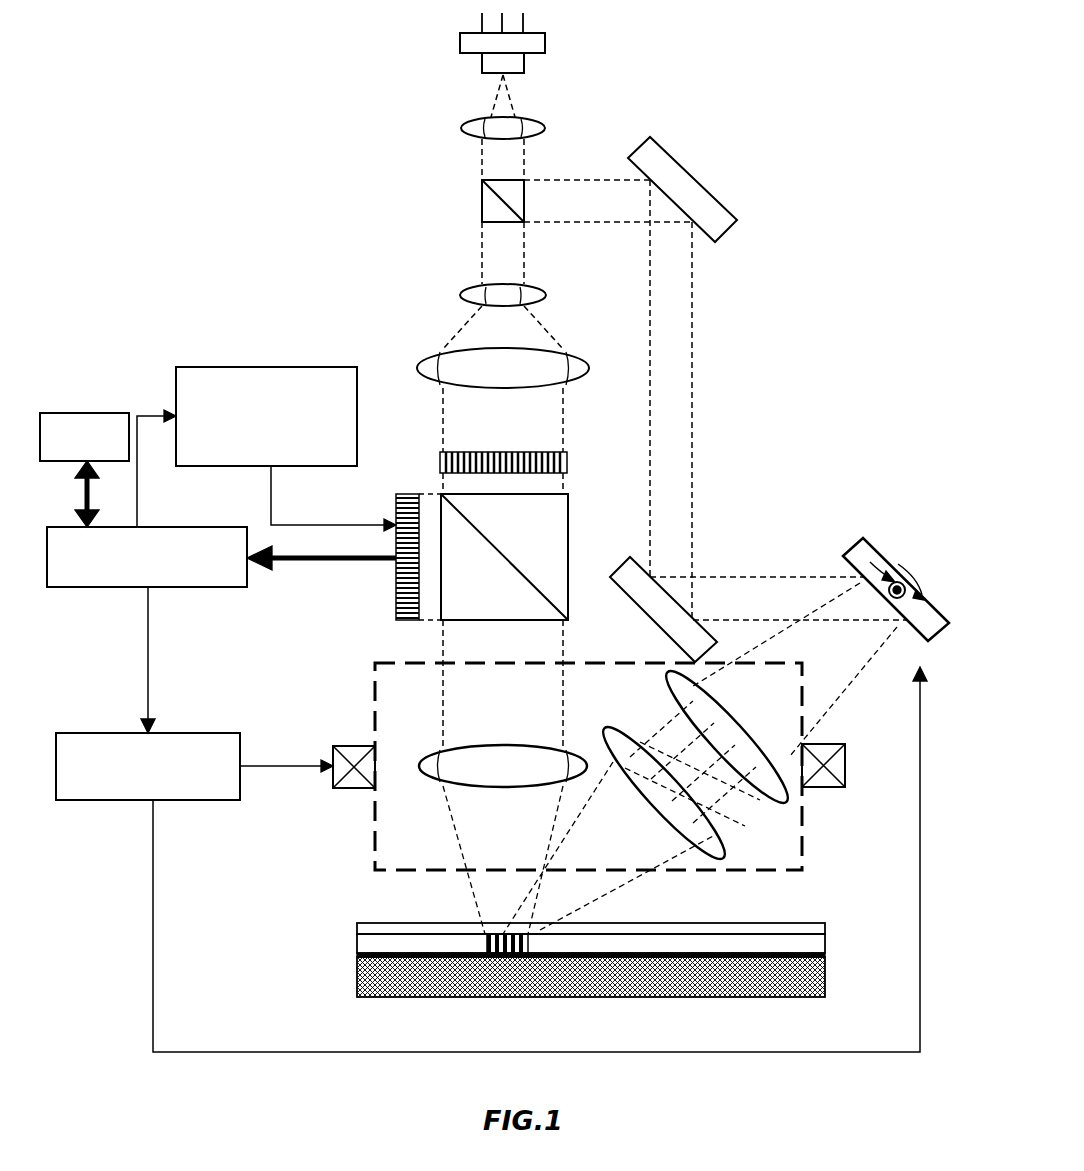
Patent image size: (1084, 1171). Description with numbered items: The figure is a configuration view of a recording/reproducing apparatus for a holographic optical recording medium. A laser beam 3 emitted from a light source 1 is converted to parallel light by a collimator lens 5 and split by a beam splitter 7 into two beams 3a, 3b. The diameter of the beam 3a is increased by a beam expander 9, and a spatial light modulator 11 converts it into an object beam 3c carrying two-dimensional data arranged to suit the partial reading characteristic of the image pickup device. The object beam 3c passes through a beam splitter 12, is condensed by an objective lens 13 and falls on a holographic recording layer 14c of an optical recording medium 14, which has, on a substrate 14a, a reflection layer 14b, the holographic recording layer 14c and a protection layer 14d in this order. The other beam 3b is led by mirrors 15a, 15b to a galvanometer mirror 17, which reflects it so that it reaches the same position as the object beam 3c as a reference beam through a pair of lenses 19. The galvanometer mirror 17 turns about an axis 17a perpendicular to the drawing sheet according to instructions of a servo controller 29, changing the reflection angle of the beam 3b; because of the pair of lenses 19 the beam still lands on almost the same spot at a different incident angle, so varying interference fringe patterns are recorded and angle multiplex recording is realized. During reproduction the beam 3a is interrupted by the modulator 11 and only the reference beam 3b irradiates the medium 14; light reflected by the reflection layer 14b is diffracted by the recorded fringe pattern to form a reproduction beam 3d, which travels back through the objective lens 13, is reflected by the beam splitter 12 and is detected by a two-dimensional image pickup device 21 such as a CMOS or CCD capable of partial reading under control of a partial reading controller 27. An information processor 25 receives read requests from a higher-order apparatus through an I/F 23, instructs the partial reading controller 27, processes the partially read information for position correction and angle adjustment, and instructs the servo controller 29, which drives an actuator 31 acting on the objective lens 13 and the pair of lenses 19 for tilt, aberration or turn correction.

The light source 1 is at (460, 37).
The laser beam 3 is at (494, 95).
The beam 3a is at (482, 250).
The beam 3b is at (592, 178).
The object beam 3c is at (441, 643).
The reproduction beam 3d is at (442, 683).
The collimator lens 5 is at (461, 128).
The beam splitter 7 is at (482, 190).
The beam expander 9 is at (412, 283).
The spatial light modulator 11 is at (440, 458).
The beam splitter 12 is at (568, 517).
The objective lens 13 is at (441, 758).
The optical recording medium 14 is at (625, 934).
The substrate 14a is at (825, 980).
The reflection layer 14b is at (825, 955).
The holographic recording layer 14c is at (820, 946).
The protection layer 14d is at (820, 930).
The mirror 15a is at (662, 150).
The mirror 15b is at (622, 593).
The galvanometer mirror 17 is at (867, 540).
The axis 17a is at (886, 582).
The pair of lenses 19 is at (718, 870).
The two-dimensional image pickup device 21 is at (396, 505).
The I/F 23 is at (92, 413).
The information processor 25 is at (180, 587).
The partial reading controller 27 is at (225, 367).
The servo controller 29 is at (190, 800).
The actuator 31 is at (333, 748).